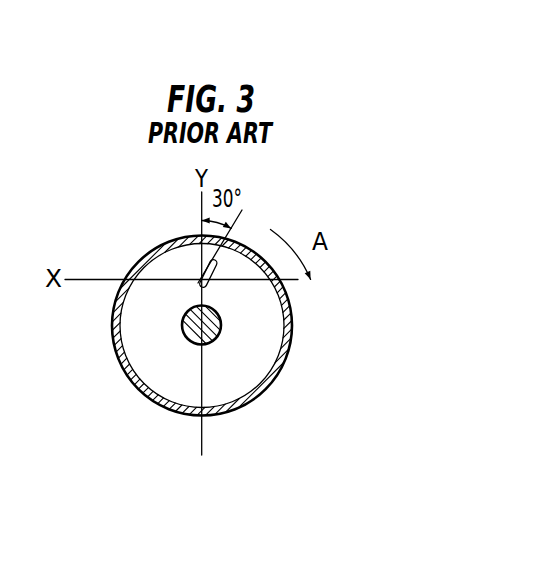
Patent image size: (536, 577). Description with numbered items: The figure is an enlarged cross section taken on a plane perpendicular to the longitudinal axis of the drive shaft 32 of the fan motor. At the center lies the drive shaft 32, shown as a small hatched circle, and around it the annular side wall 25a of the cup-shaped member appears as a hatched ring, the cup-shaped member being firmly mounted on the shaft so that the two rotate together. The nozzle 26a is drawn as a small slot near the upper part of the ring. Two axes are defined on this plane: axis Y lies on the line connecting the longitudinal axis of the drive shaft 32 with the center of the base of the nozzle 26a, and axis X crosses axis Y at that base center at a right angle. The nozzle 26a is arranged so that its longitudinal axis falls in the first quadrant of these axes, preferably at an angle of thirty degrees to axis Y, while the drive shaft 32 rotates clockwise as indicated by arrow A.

The annular side wall 25a is at (264, 393).
The nozzle 26a is at (198, 279).
The drive shaft 32 is at (192, 333).